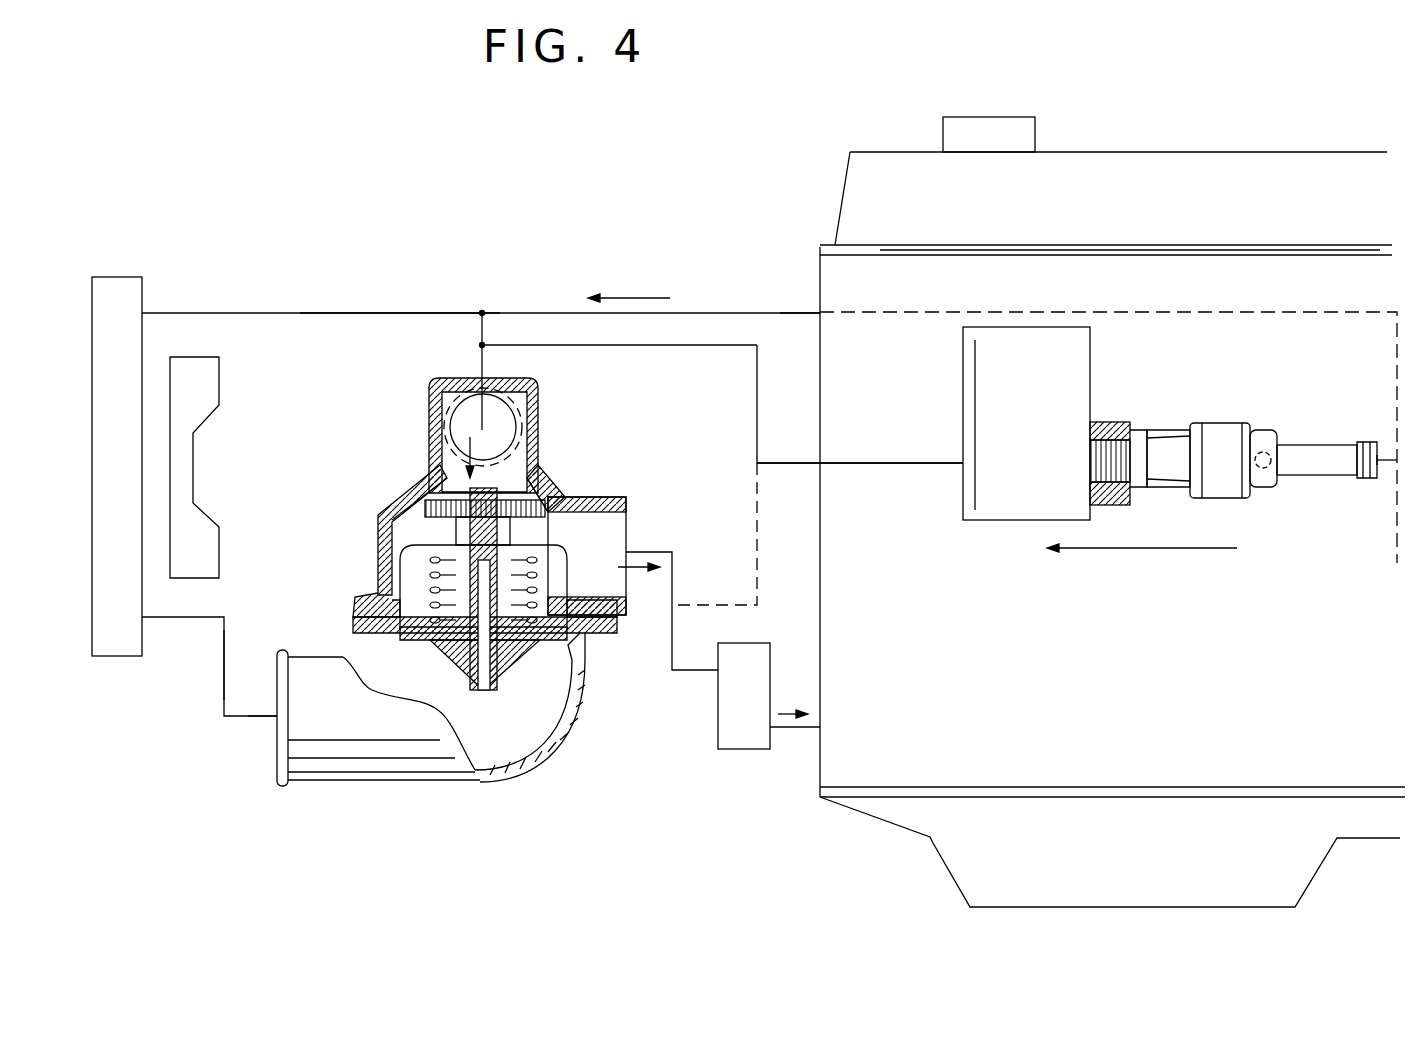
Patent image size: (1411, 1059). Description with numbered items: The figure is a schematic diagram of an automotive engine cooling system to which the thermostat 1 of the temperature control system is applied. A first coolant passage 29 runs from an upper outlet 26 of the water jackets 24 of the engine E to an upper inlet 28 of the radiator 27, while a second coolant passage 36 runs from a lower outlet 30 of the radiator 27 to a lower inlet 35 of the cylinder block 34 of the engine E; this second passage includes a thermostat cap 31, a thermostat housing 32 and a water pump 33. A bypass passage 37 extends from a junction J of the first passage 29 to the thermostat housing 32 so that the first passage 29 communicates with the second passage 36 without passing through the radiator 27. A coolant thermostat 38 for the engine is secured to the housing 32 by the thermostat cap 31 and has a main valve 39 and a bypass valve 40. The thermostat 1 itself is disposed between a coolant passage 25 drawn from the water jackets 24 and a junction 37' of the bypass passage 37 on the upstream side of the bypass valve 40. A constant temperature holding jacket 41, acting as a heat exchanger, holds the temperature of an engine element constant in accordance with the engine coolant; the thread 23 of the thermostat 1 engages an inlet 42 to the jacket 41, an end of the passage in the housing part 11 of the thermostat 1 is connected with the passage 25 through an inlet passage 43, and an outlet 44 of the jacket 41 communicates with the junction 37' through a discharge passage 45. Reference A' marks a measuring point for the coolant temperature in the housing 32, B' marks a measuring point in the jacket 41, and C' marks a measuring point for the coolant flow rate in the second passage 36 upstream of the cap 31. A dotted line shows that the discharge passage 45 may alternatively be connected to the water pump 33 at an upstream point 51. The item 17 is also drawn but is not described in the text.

The thermostat 1 is at (1223, 423).
The housing part 11 is at (1325, 445).
The gasket 17 is at (1265, 452).
The thread 23 is at (1135, 457).
The water jackets 24 is at (1188, 280).
The coolant passage 25 is at (1404, 322).
The upper outlet 26 is at (820, 313).
The radiator 27 is at (118, 277).
The upper inlet 28 is at (145, 313).
The first coolant passage 29 is at (420, 313).
The lower outlet 30 is at (145, 625).
The thermostat cap 31 is at (407, 763).
The thermostat housing 32 is at (378, 542).
The water pump 33 is at (718, 698).
The cylinder block 34 is at (953, 738).
The lower inlet 35 is at (820, 728).
The second coolant passage 36 is at (615, 550).
The bypass passage 37 is at (514, 435).
The junction 37' is at (619, 290).
The coolant thermostat 38 is at (510, 682).
The main valve 39 is at (420, 612).
The bypass valve 40 is at (540, 482).
The constant temperature holding jacket 41 is at (987, 520).
The inlet 42 is at (1112, 422).
The inlet passage 43 is at (1385, 463).
The outlet 44 is at (963, 460).
The discharge passage 45 is at (757, 392).
The upstream point 51 is at (675, 605).
The measuring point A' is at (454, 530).
The measuring point B' is at (959, 425).
The measuring point C' is at (254, 649).
The engine E is at (1252, 150).
The junction J is at (482, 313).